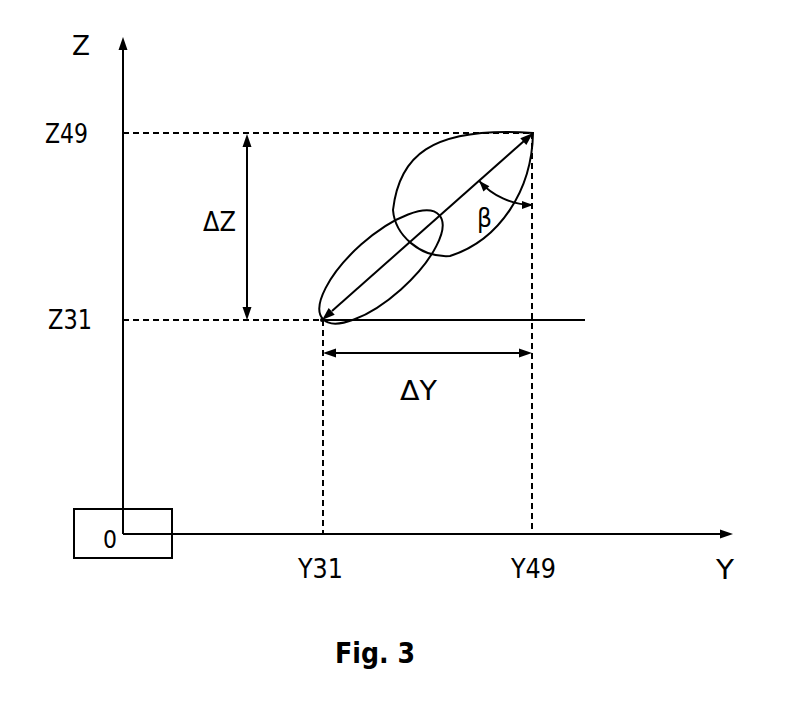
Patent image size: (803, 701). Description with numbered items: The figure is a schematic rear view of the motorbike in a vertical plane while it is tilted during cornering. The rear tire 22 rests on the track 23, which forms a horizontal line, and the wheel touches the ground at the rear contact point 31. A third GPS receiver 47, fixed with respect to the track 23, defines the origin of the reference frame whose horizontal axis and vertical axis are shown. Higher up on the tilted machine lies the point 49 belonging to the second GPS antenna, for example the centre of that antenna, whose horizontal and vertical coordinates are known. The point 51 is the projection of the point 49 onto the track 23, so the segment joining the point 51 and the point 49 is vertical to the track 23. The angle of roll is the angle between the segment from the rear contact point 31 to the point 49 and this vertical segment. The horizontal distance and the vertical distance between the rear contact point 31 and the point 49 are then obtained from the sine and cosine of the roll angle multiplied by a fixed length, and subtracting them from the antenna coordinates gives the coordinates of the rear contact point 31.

The rear tire 22 is at (332, 261).
The track 23 is at (561, 318).
The rear contact point 31 is at (321, 321).
The third GPS receiver 47 is at (90, 508).
The point belonging to the second GPS antenna 49 is at (536, 130).
The projection point 51 is at (536, 322).